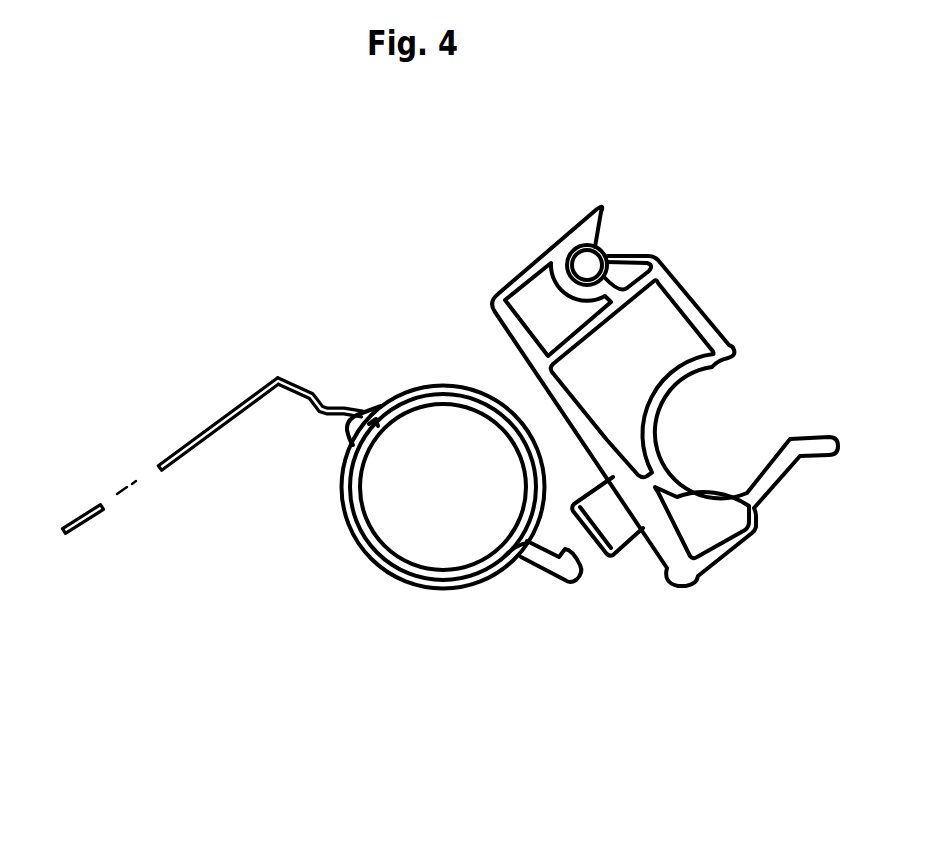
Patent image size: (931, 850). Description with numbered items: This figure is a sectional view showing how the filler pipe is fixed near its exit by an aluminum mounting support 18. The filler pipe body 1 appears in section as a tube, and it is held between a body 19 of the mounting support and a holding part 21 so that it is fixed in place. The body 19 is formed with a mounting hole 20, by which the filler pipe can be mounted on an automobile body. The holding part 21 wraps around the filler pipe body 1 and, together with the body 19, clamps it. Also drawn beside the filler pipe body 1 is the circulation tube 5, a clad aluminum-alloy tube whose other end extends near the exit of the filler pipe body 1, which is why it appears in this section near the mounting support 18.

The filler pipe body 1 is at (451, 464).
The circulation tube 5 is at (613, 256).
The mounting support 18 is at (213, 426).
The body 19 is at (183, 436).
The mounting hole 20 is at (133, 493).
The holding part 21 is at (336, 403).